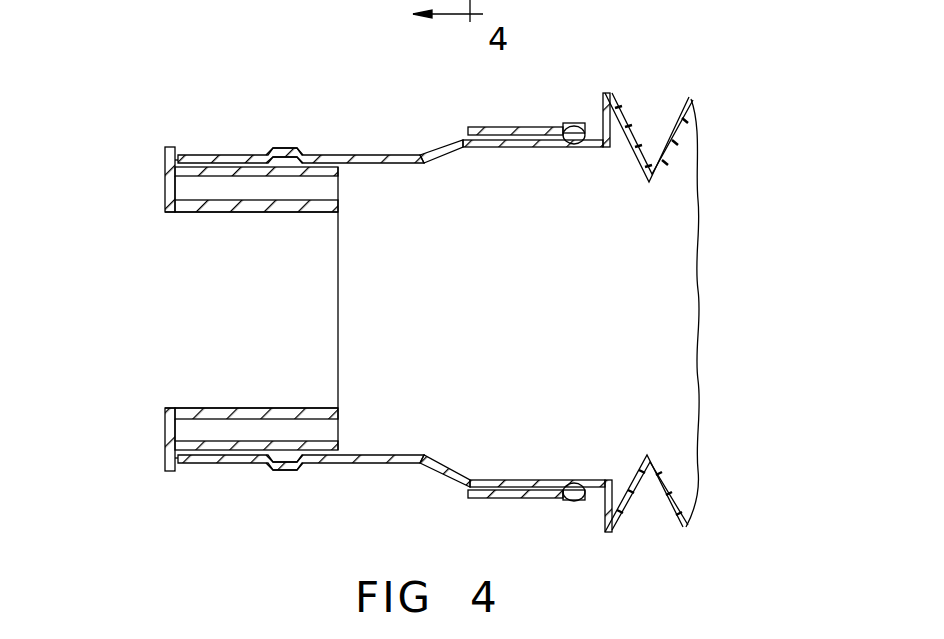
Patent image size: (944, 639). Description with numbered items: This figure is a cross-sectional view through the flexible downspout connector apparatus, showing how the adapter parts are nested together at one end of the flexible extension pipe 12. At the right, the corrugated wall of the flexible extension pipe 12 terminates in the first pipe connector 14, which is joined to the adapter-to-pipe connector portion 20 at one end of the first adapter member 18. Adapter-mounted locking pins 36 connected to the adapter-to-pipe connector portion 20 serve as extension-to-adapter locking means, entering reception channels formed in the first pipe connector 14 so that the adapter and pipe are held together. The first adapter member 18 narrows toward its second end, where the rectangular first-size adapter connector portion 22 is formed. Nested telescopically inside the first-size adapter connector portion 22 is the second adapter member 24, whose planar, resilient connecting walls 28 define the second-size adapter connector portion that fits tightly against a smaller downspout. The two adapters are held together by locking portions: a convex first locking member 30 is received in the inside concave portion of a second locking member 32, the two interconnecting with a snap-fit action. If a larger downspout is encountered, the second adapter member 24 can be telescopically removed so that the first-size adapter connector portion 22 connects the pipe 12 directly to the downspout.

The flexible extension pipe 12 is at (686, 101).
The first pipe connector 14 is at (527, 125).
The first adapter member 18 is at (398, 136).
The adapter-to-pipe connector portion 20 is at (547, 148).
The first-size adapter connector portion 22 is at (198, 152).
The second adapter member 24 is at (150, 202).
The connecting walls 28 is at (258, 408).
The convex first locking member 30 is at (292, 170).
The second locking member 32 is at (291, 148).
The adapter-mounted locking pin 36 is at (588, 122).